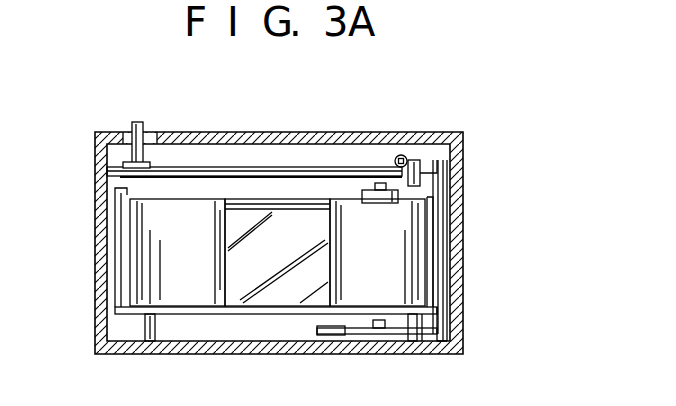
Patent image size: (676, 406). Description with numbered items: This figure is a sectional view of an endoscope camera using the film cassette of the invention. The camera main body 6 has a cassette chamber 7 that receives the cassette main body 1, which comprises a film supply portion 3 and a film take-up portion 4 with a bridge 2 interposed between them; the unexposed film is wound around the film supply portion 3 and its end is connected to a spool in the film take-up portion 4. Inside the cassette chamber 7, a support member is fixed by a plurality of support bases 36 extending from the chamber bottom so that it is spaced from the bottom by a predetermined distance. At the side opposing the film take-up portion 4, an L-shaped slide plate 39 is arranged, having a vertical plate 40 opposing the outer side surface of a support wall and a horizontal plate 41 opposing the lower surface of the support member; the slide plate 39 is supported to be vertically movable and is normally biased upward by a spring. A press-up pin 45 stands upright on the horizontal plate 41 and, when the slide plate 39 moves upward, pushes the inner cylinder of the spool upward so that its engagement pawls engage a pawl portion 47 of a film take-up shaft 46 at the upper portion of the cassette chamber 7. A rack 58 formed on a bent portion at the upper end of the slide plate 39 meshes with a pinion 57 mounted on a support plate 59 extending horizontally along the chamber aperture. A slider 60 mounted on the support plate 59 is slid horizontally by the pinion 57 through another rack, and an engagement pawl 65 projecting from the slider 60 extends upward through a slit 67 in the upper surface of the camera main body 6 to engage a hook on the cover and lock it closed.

The cassette main body 1 is at (148, 195).
The bridge 2 is at (243, 315).
The film supply portion 3 is at (135, 243).
The film take-up portion 4 is at (440, 280).
The camera main body 6 is at (464, 163).
The cassette chamber 7 is at (280, 150).
The support bases 36 is at (147, 330).
The slide plate 39 is at (451, 193).
The vertical plate 40 is at (440, 228).
The horizontal plate 41 is at (392, 334).
The press-up pin 45 is at (375, 326).
The film take-up shaft 46 is at (378, 182).
The pawl portion 47 is at (378, 204).
The pinion 57 is at (404, 156).
The rack 58 is at (419, 171).
The support plate 59 is at (318, 156).
The slider 60 is at (243, 167).
The engagement pawl 65 is at (138, 121).
The slit 67 is at (150, 133).